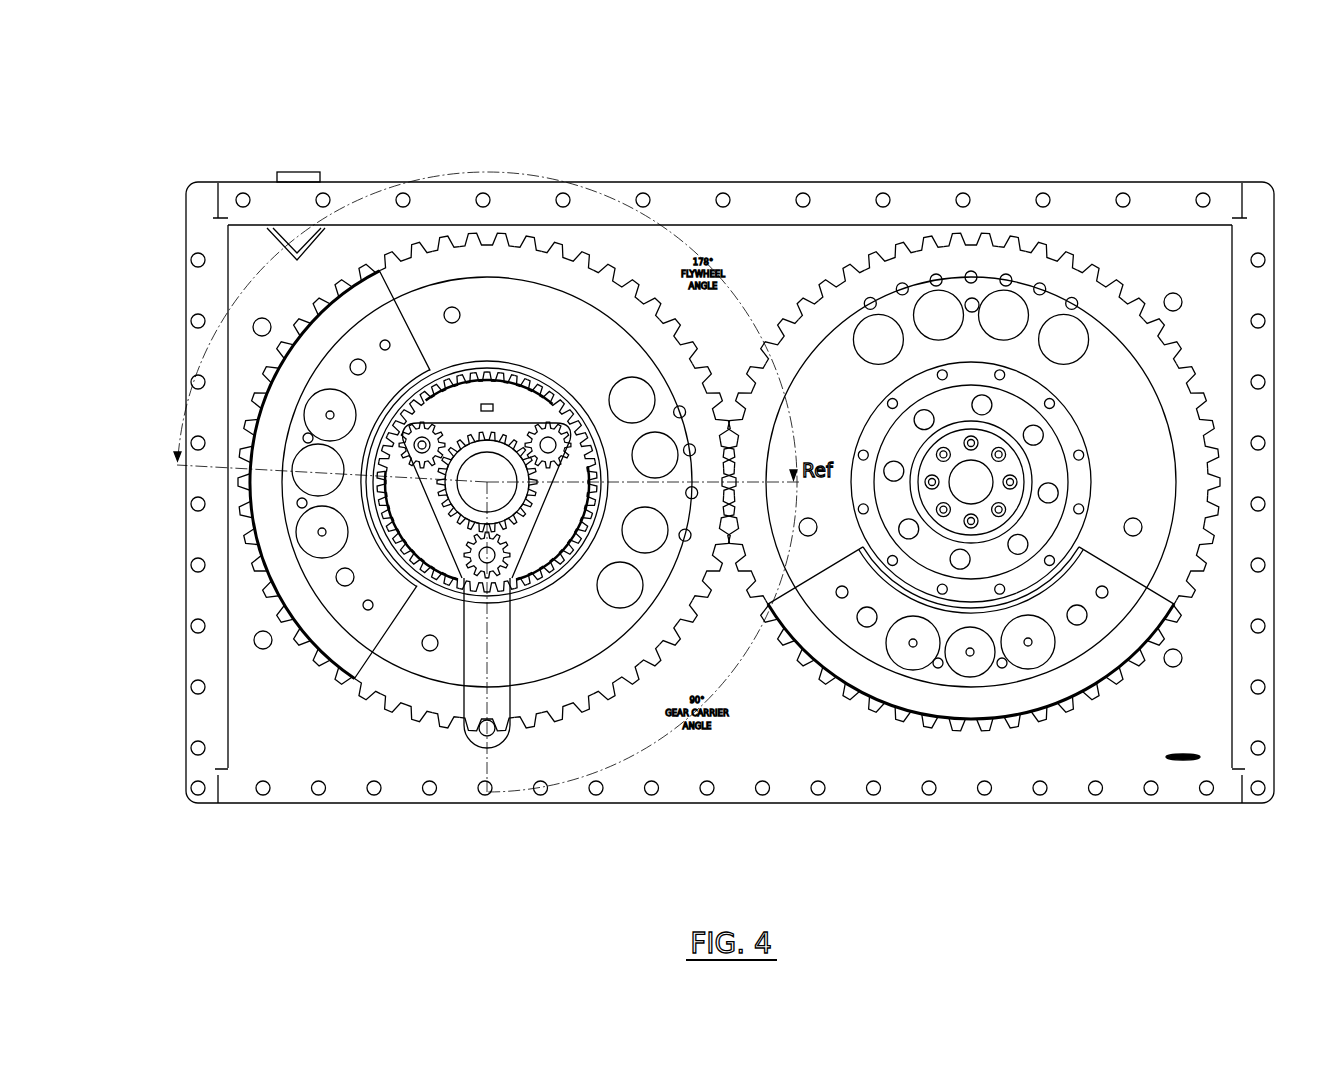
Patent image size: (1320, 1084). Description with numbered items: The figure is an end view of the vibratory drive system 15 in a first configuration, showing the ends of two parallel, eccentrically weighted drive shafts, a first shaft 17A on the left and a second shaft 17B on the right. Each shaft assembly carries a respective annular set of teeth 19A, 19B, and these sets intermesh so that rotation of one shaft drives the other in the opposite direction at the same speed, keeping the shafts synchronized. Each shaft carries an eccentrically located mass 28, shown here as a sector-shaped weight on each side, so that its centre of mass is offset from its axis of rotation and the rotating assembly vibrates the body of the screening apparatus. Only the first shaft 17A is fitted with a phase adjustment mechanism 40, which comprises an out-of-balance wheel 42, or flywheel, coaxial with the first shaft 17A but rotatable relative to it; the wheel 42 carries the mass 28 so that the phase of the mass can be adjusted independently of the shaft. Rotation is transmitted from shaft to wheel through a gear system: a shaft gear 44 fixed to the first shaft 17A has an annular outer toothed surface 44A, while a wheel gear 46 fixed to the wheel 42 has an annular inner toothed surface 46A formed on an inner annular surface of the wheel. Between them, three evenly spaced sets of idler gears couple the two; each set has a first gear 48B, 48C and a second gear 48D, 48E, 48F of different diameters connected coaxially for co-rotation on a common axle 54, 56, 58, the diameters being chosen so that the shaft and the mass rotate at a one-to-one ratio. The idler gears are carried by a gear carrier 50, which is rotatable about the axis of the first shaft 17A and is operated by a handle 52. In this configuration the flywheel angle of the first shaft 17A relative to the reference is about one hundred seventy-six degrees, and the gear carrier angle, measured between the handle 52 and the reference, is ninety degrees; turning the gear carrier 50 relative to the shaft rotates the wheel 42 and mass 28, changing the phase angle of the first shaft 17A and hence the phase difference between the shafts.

The vibratory drive system 15 is at (785, 235).
The first shaft 17A is at (492, 470).
The second shaft 17B is at (963, 468).
The annular set of teeth 19A is at (320, 283).
The annular set of teeth 19B is at (1127, 292).
The mass 28 is at (277, 398).
The phase adjustment mechanism 40 is at (628, 268).
The wheel 42 is at (440, 417).
The shaft gear 44 is at (443, 492).
The annular outer toothed surface 44A is at (440, 520).
The wheel gear 46 is at (473, 367).
The annular inner toothed surface 46A is at (495, 372).
The first idler gear 48B is at (410, 405).
The first idler gear 48C is at (482, 565).
The second idler gear 48D is at (550, 410).
The second idler gear 48E is at (393, 420).
The second idler gear 48F is at (417, 587).
The gear carrier 50 is at (433, 372).
The handle 52 is at (480, 693).
The axle 54 is at (550, 437).
The axle 56 is at (413, 450).
The axle 58 is at (450, 577).